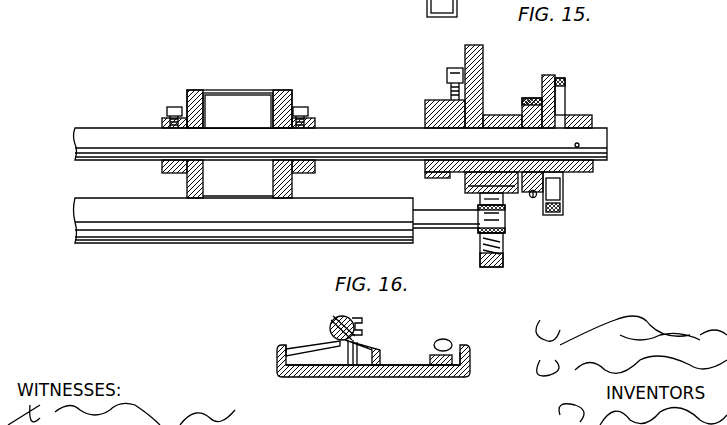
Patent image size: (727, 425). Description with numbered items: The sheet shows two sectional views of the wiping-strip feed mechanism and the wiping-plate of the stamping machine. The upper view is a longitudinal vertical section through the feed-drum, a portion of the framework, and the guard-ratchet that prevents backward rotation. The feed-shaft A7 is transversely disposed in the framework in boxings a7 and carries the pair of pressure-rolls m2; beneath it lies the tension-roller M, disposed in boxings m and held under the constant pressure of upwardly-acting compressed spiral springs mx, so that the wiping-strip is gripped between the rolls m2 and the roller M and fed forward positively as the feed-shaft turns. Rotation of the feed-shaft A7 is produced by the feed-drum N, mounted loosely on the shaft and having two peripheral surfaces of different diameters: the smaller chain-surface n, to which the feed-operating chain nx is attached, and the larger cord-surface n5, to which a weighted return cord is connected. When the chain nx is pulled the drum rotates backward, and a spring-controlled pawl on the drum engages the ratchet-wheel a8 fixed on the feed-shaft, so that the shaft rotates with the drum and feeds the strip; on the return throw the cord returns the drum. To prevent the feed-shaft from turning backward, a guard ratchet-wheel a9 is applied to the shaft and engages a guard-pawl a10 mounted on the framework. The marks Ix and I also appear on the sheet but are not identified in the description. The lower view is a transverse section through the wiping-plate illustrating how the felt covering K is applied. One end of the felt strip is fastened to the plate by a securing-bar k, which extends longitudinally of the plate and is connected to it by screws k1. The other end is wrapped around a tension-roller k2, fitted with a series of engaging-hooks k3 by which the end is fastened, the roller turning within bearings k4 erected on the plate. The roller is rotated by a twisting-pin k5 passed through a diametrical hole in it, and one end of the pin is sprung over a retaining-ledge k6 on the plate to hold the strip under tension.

In FIG. 15, the feed-shaft A7 is at (607, 145).
In FIG. 15, the bearing bracket Ix is at (240, 86).
In FIG. 15, the pressure-rolls m2 is at (273, 108).
In FIG. 15, the guard ratchet-wheel a9 is at (440, 104).
In FIG. 15, the guard-pawl a10 is at (447, 83).
In FIG. 15, the boxings a7 is at (500, 110).
In FIG. 15, the feed-drum N is at (570, 70).
In FIG. 15, the chain-surface n is at (524, 98).
In FIG. 15, the cord-surface n5 is at (565, 80).
In FIG. 15, the feed-operating chain nx is at (530, 200).
In FIG. 15, the ratchet-wheel a8 is at (563, 180).
In FIG. 15, the compressed spiral springs mx is at (505, 245).
In FIG. 15, the boxings m is at (490, 268).
In FIG. 15, the tension-roller M is at (233, 245).
In FIG. 16, the covering K is at (445, 382).
In FIG. 16, the bearings k4 is at (342, 348).
In FIG. 16, the engaging-hooks k3 is at (330, 329).
In FIG. 16, the twisting-pin k5 is at (335, 321).
In FIG. 16, the tension-roller k2 is at (358, 324).
In FIG. 16, the retaining-ledge k6 is at (378, 352).
In FIG. 16, the screws k1 is at (432, 357).
In FIG. 16, the securing-bar k is at (455, 350).
In FIG. 16, the base I is at (387, 370).